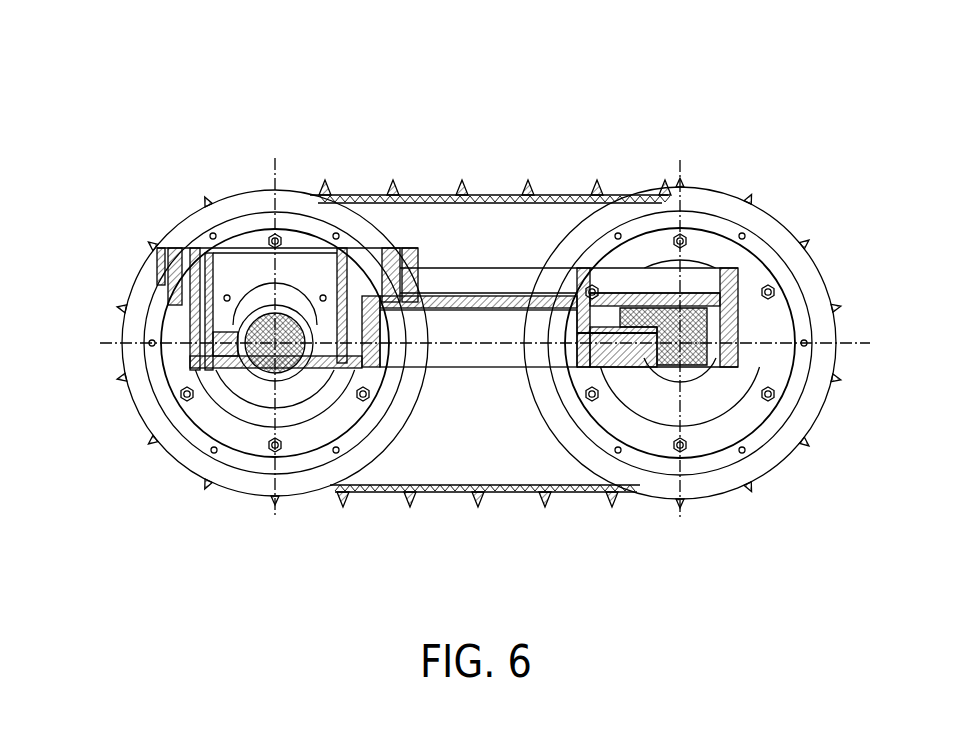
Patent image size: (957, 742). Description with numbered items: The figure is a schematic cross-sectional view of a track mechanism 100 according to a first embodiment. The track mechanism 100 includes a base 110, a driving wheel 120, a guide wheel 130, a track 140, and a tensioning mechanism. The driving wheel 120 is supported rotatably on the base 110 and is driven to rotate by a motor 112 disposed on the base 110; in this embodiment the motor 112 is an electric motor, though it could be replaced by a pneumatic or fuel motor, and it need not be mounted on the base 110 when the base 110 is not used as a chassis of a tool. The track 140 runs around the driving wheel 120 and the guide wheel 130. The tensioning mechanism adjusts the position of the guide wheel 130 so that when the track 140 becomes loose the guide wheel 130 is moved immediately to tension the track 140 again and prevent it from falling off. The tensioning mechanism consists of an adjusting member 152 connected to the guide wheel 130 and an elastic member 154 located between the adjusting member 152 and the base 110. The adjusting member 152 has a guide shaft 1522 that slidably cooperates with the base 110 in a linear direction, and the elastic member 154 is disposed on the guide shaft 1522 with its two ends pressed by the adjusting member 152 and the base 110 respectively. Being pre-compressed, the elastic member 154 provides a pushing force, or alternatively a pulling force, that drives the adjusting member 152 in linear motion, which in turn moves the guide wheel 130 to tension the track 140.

The track mechanism 100 is at (430, 28).
The base 110 is at (472, 297).
The motor 112 is at (222, 345).
The driving wheel 120 is at (247, 203).
The guide wheel 130 is at (710, 205).
The track 140 is at (556, 195).
The adjusting member 152 is at (700, 367).
The guide shaft 1522 is at (602, 352).
The elastic member 154 is at (616, 352).